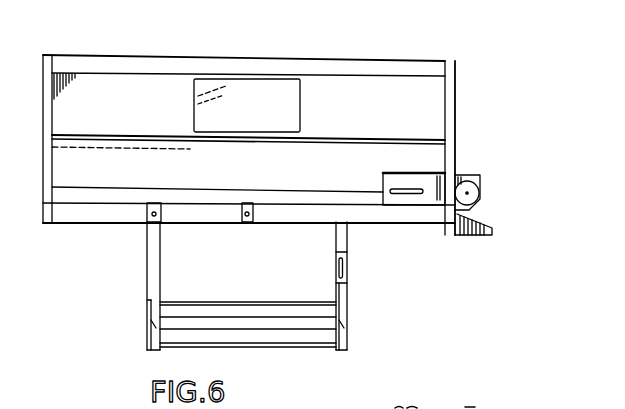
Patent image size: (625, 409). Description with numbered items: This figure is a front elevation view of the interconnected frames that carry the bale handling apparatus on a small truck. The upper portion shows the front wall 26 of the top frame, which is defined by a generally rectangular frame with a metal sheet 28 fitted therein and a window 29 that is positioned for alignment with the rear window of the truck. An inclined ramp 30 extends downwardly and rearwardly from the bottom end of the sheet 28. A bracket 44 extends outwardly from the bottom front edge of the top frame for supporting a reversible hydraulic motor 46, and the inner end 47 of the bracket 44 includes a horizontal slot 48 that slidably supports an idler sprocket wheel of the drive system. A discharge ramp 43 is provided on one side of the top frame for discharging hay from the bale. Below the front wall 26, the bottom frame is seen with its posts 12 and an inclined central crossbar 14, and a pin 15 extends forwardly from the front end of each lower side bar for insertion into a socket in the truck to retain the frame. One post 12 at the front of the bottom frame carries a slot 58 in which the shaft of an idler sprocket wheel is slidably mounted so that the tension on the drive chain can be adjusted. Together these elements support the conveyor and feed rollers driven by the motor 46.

The front wall 26 is at (148, 55).
The metal sheet 28 is at (391, 113).
The window 29 is at (275, 113).
The inclined ramp 30 is at (252, 180).
The inner end 47 is at (387, 173).
The horizontal slot 48 is at (412, 194).
The bracket 44 is at (460, 175).
The reversible hydraulic motor 46 is at (475, 191).
The discharge ramp 43 is at (484, 228).
The post 12 is at (154, 270).
The inclined central crossbar 14 is at (215, 302).
The pin 15 is at (155, 325).
The slot 58 is at (338, 272).